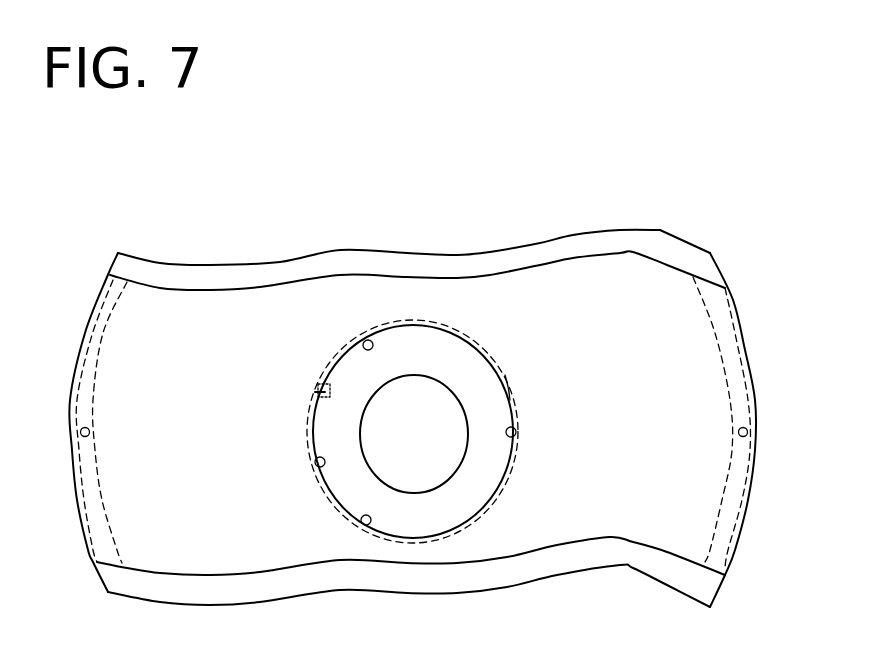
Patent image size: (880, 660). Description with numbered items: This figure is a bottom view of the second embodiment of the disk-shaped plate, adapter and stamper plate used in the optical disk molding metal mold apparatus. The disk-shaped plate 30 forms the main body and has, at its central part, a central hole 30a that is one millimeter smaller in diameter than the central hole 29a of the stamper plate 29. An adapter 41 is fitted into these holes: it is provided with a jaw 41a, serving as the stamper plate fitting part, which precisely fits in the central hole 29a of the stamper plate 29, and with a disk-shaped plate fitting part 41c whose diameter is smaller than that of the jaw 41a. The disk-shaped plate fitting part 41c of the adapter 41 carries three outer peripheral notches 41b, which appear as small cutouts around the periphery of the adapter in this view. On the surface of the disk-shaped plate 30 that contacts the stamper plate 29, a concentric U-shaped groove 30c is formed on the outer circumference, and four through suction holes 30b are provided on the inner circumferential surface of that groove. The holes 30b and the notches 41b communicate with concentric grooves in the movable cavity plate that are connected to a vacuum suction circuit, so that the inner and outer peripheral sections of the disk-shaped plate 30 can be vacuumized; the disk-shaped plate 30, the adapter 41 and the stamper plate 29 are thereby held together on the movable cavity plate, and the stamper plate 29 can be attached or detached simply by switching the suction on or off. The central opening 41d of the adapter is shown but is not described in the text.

The stamper plate 29 is at (232, 278).
The central hole of the stamper plate 29a is at (323, 384).
The disk-shaped plate 30 is at (528, 277).
The central hole of the disk-shaped plate 30a is at (315, 462).
The through suction holes 30b is at (89, 431).
The U-shaped groove 30c is at (98, 372).
The adapter 41 is at (428, 353).
The jaw 41a is at (482, 347).
The outer peripheral notches 41b is at (516, 432).
The disk-shaped plate fitting part 41c is at (505, 388).
The central opening of bearing holder 41d is at (452, 472).